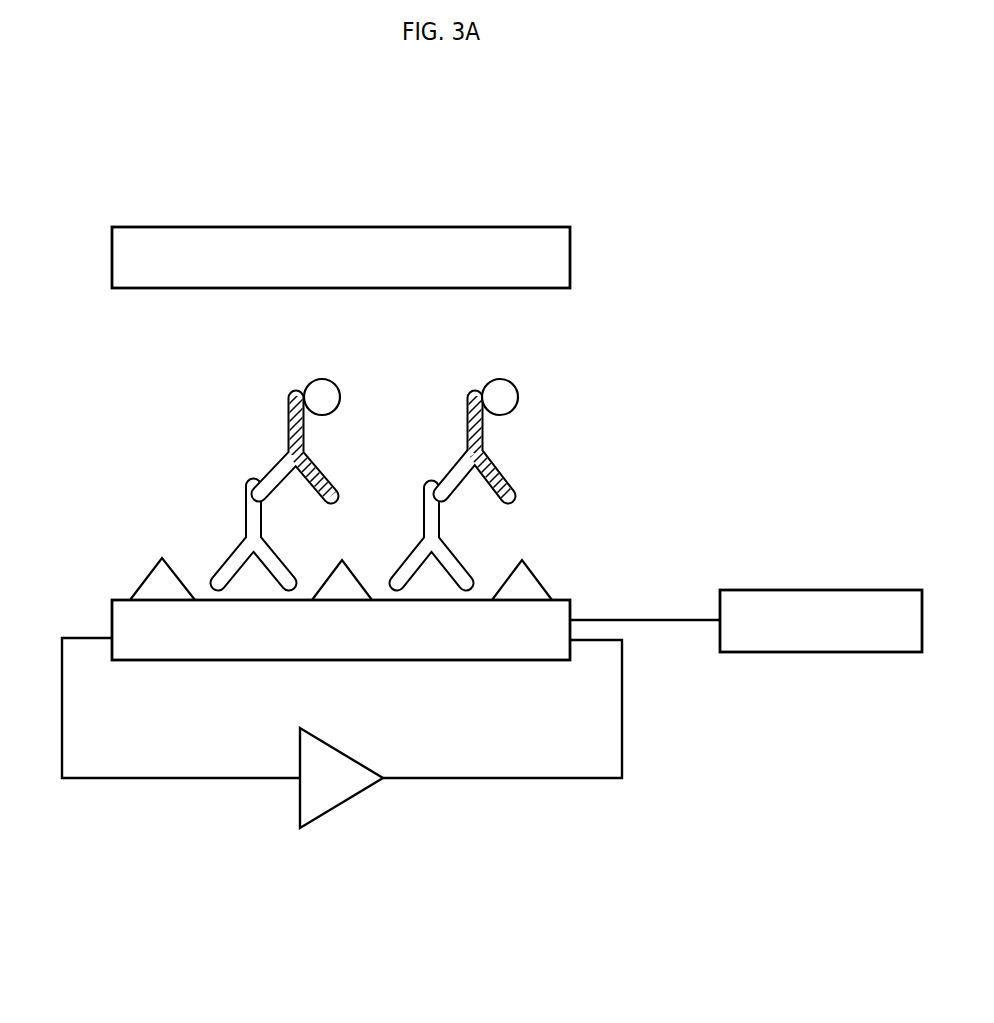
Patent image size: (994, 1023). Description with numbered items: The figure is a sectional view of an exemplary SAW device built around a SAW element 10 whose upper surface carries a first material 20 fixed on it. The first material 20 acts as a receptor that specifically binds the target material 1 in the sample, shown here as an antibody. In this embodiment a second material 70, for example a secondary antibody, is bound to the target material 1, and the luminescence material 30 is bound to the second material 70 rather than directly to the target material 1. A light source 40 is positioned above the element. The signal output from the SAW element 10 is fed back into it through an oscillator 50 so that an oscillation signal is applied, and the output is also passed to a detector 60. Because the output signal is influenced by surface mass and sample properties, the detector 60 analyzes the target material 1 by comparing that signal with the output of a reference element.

The target material 1 is at (253, 518).
The SAW element 10 is at (473, 660).
The first material 20 is at (333, 587).
The luminescence material 30 is at (330, 392).
The light source 40 is at (473, 227).
The oscillator 50 is at (343, 803).
The detector 60 is at (822, 652).
The second material 70 is at (277, 463).